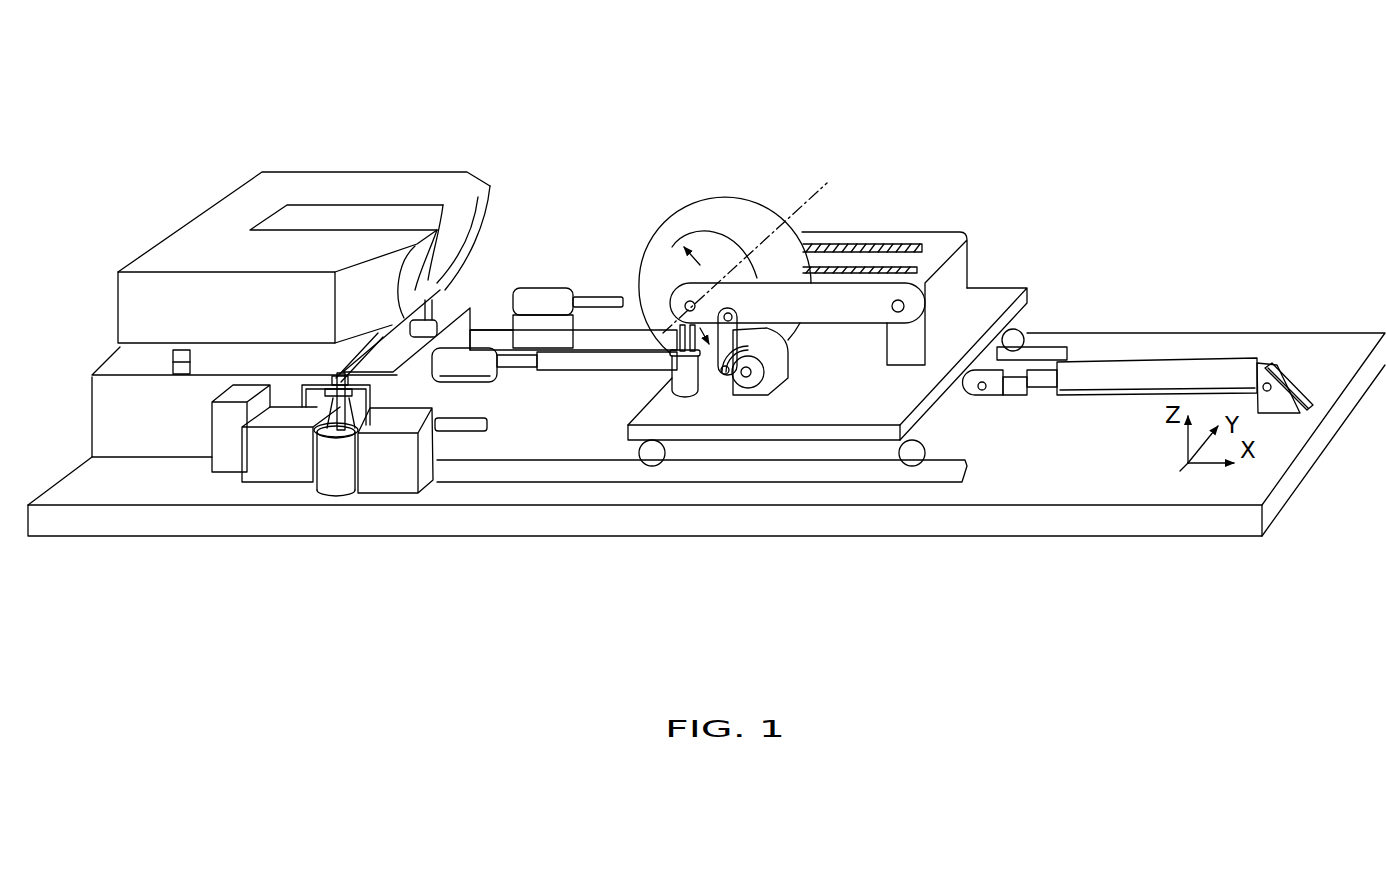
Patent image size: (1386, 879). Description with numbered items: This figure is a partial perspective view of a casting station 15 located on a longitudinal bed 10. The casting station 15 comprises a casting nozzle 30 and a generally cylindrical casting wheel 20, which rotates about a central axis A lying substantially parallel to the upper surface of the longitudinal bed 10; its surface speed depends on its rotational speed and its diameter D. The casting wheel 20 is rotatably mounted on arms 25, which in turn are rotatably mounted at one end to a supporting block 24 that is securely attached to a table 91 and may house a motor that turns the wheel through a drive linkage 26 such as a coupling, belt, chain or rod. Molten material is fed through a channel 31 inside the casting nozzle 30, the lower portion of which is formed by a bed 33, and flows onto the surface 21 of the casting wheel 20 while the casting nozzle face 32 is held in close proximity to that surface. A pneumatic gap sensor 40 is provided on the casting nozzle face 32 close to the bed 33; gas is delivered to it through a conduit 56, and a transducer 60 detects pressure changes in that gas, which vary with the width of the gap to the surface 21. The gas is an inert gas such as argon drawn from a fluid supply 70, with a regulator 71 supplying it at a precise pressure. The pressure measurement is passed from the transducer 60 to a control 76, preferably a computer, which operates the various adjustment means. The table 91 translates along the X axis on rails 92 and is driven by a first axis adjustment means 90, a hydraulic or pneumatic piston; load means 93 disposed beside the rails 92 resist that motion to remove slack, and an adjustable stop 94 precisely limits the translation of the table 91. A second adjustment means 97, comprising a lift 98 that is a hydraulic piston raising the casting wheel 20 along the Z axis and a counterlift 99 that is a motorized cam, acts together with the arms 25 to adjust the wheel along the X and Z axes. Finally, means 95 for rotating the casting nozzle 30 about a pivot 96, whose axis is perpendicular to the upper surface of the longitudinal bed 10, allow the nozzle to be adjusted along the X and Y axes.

The longitudinal bed 10 is at (1258, 482).
The casting station 15 is at (680, 91).
The casting wheel 20 is at (753, 186).
The surface of casting wheel 21 is at (645, 252).
The supporting block 24 is at (957, 311).
The arms 25 is at (898, 233).
The drive linkage 26 is at (842, 245).
The casting nozzle 30 is at (382, 150).
The channel 31 is at (320, 217).
The casting nozzle face 32 is at (462, 232).
The bed 33 is at (452, 235).
The pneumatic gap sensor 40 is at (457, 282).
The conduit 56 is at (333, 360).
The transducer 60 is at (290, 466).
The fluid supply 70 is at (350, 479).
The regulator 71 is at (348, 430).
The control 76 is at (225, 427).
The first axis adjustment means 90 is at (1137, 380).
The table 91 is at (892, 412).
The rails 92 is at (1045, 348).
The load means 93 is at (405, 418).
The adjustable stop 94 is at (477, 367).
The means for rotating casting nozzle 95 is at (182, 368).
The pivot 96 is at (412, 342).
The second adjustment means 97 is at (710, 381).
The lift 98 is at (675, 379).
The counterlift 99 is at (780, 347).
The axis A is at (815, 187).
The diameter D is at (698, 262).